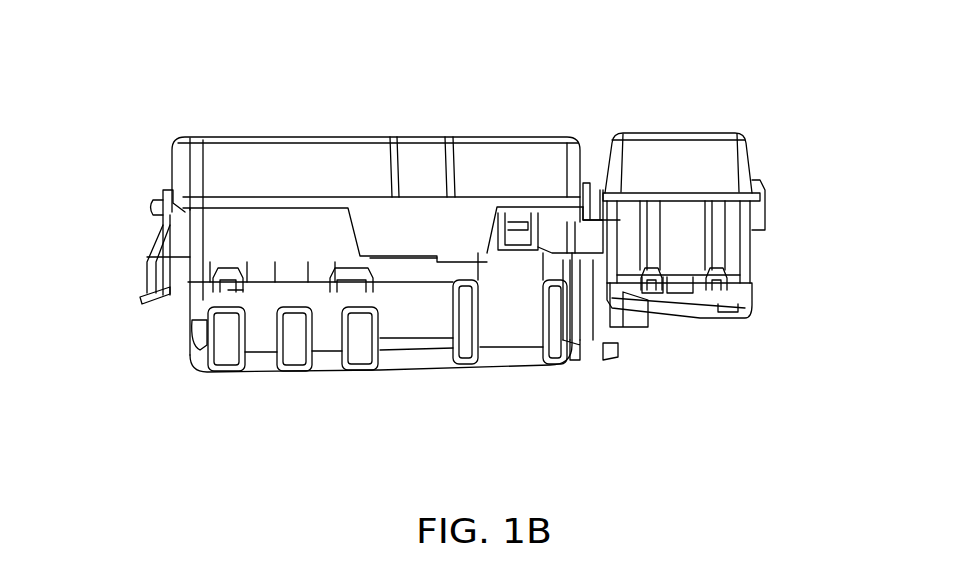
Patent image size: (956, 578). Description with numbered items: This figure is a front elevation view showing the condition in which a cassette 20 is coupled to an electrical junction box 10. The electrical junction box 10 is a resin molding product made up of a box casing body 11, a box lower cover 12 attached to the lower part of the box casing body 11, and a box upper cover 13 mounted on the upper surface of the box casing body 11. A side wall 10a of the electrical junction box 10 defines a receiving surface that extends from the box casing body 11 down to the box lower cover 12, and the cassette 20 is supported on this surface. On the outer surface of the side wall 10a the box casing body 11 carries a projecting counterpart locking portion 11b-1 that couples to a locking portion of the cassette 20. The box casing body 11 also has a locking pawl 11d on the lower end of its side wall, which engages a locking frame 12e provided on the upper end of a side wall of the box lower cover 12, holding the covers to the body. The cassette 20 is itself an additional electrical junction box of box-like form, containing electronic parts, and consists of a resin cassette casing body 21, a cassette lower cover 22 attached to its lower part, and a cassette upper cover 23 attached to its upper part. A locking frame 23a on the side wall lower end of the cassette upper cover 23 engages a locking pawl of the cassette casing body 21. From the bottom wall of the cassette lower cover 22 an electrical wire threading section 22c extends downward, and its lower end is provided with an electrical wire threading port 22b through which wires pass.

The electrical junction box 10 is at (265, 137).
The side wall 10a is at (591, 272).
The box casing body 11 is at (220, 244).
The counterpart locking portion 11b-1 is at (577, 233).
The locking pawl 11d is at (198, 372).
The box lower cover 12 is at (187, 322).
The locking frame 12e is at (228, 290).
The box upper cover 13 is at (195, 172).
The cassette 20 is at (650, 134).
The cassette casing body 21 is at (760, 245).
The cassette lower cover 22 is at (748, 303).
The electrical wire threading port 22b is at (628, 330).
The electrical wire threading section 22c is at (637, 325).
The cassette upper cover 23 is at (757, 155).
The locking frame 23a is at (767, 206).